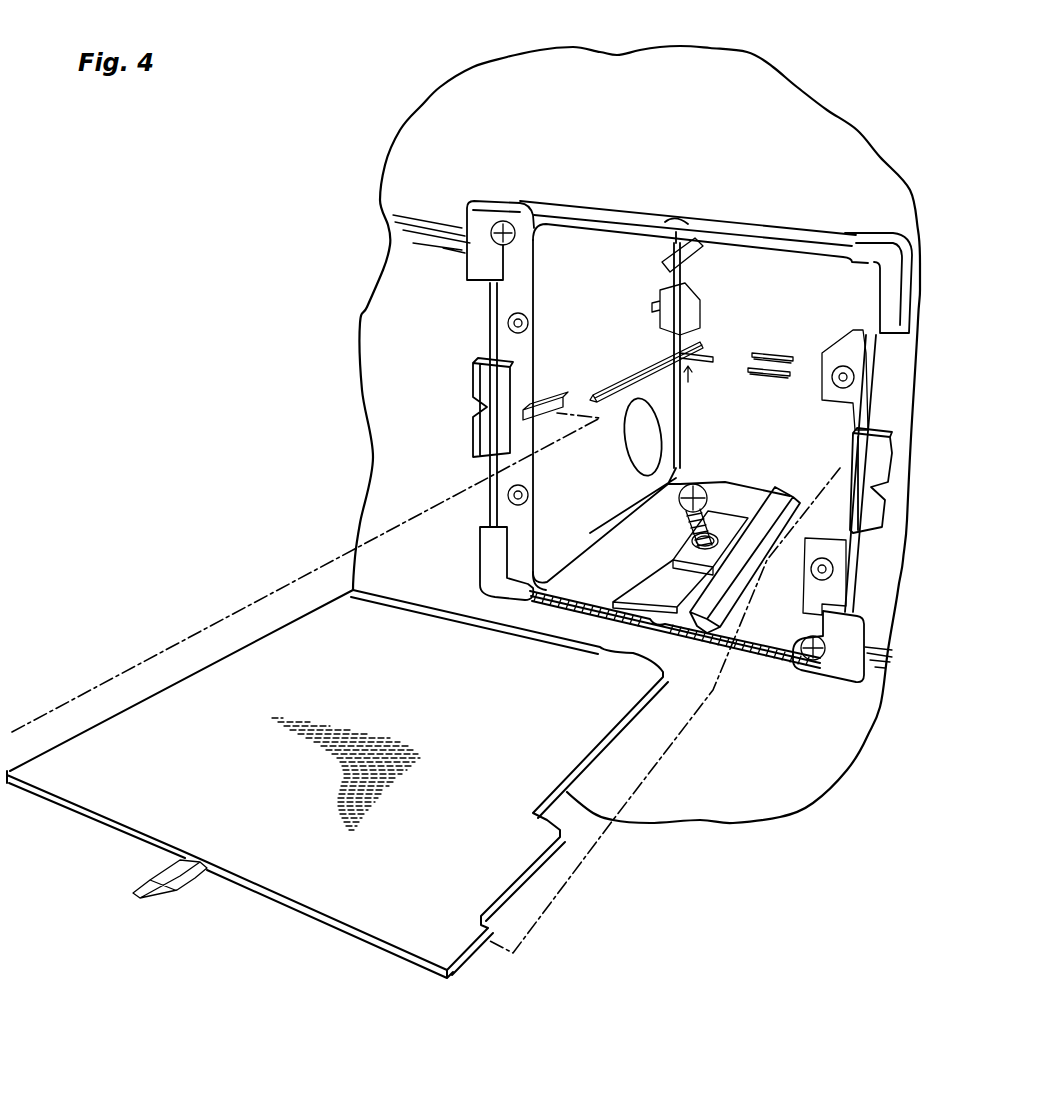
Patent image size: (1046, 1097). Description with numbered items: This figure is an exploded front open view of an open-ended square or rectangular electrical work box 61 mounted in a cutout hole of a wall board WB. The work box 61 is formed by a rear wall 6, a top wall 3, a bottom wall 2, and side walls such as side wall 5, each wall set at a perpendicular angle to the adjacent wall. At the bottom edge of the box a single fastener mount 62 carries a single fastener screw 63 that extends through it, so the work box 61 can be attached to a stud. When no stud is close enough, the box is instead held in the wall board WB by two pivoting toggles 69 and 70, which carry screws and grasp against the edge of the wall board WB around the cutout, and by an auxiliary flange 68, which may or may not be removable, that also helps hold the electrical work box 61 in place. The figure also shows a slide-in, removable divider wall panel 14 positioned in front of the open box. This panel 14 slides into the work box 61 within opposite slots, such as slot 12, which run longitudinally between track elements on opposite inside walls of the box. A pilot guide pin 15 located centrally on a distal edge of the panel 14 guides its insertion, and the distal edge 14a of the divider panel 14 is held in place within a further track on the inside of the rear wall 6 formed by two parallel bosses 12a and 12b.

The wall board WB is at (688, 111).
The bottom wall 2 is at (637, 553).
The top wall 3 is at (748, 233).
The side wall 5 is at (602, 276).
The rear wall 6 is at (777, 291).
The slot 12 is at (615, 371).
The parallel boss 12a is at (767, 360).
The parallel boss 12b is at (756, 380).
The slide-in, removable divider wall panel 14 is at (350, 938).
The distal edge 14a is at (407, 607).
The pilot guide pin 15 is at (150, 900).
The electrical work box 61 is at (565, 207).
The fastener mount 62 is at (747, 523).
The fastener screw 63 is at (693, 485).
The auxiliary flange 68 is at (863, 453).
The pivoting toggle 69 is at (477, 198).
The pivoting toggle 70 is at (833, 670).